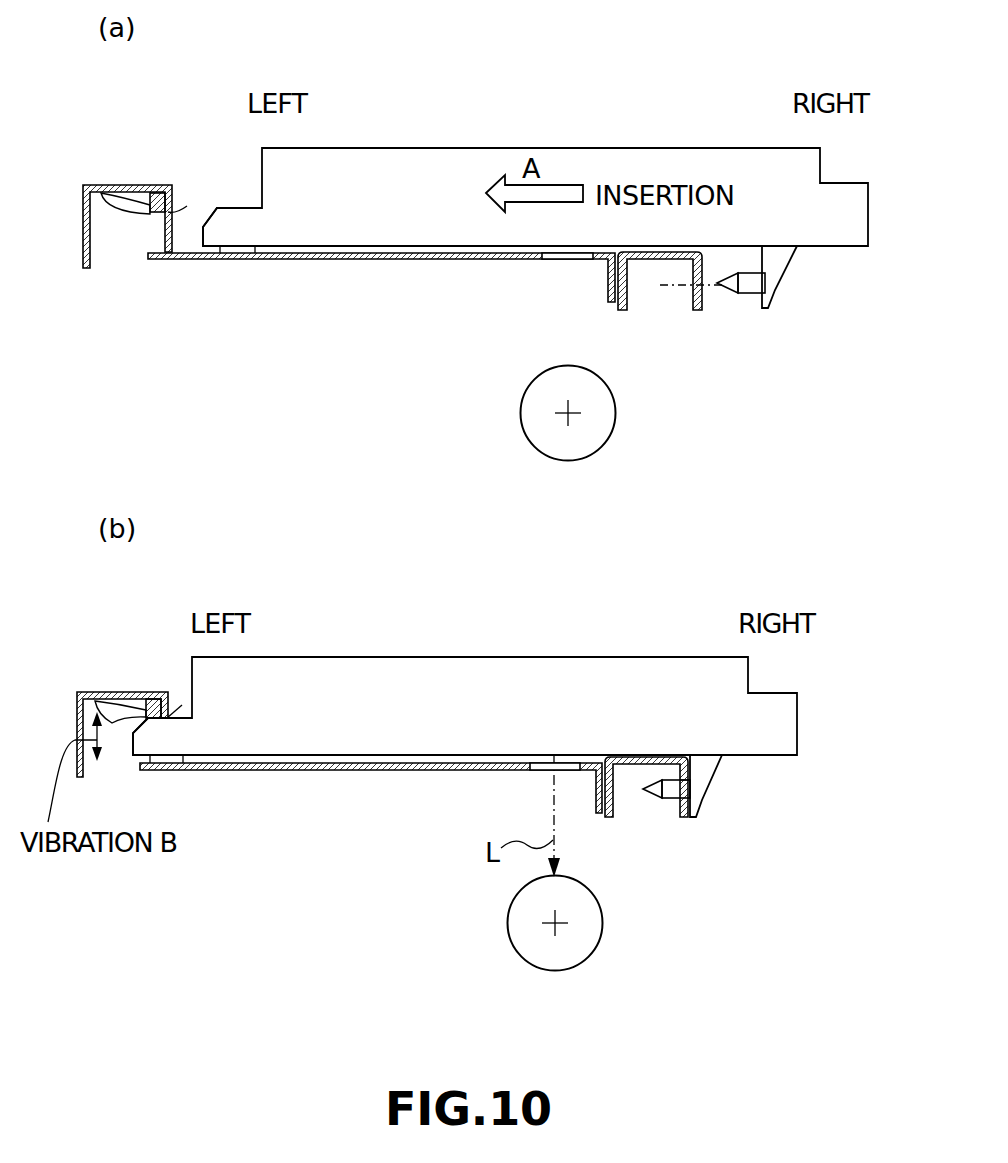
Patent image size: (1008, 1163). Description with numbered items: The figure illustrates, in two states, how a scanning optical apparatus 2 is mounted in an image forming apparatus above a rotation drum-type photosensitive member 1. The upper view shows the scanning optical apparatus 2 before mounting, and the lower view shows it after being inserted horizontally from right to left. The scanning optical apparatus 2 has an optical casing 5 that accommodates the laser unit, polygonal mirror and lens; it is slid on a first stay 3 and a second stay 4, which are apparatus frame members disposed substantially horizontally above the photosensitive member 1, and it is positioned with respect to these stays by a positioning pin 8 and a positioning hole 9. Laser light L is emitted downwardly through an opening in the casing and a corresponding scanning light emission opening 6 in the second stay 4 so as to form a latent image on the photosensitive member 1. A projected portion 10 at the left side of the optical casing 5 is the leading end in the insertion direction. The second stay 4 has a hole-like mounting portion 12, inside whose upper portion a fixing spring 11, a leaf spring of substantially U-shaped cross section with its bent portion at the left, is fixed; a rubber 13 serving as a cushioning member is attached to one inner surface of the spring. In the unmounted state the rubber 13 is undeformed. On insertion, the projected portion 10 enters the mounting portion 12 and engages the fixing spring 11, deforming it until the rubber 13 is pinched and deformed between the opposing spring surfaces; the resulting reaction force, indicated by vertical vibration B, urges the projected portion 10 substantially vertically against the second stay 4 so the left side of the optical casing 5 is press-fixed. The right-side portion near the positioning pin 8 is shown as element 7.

The photosensitive member 1 is at (616, 413).
The scanning optical apparatus 2 is at (634, 135).
The first stay 3 is at (640, 262).
The second stay 4 is at (443, 260).
The optical casing 5 is at (477, 165).
The scanning light emission opening 6 is at (565, 262).
The right projection 7 is at (780, 258).
The positioning pin 8 is at (748, 287).
The positioning hole 9 is at (703, 287).
The projected portion 10 is at (222, 218).
The fixing spring 11 is at (120, 203).
The hole-like mounting portion 12 is at (170, 228).
The rubber 13 is at (158, 192).